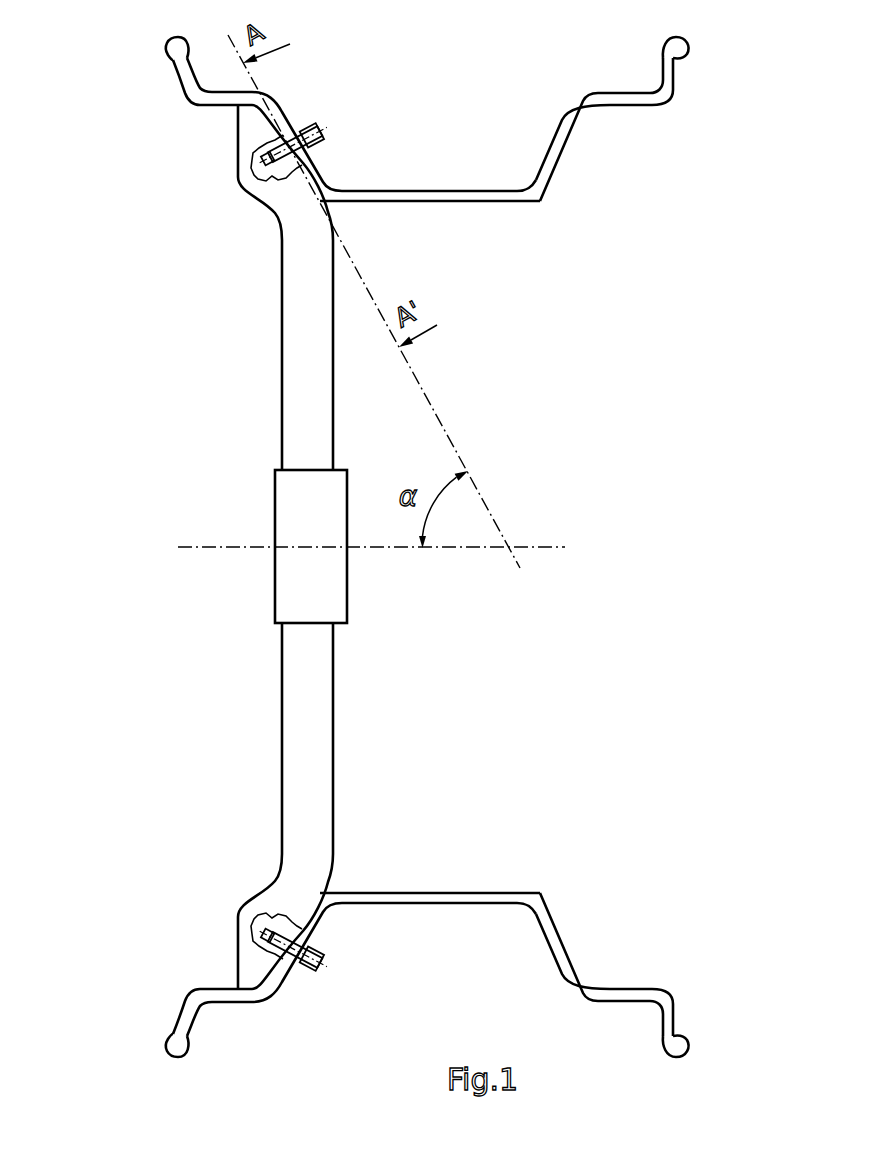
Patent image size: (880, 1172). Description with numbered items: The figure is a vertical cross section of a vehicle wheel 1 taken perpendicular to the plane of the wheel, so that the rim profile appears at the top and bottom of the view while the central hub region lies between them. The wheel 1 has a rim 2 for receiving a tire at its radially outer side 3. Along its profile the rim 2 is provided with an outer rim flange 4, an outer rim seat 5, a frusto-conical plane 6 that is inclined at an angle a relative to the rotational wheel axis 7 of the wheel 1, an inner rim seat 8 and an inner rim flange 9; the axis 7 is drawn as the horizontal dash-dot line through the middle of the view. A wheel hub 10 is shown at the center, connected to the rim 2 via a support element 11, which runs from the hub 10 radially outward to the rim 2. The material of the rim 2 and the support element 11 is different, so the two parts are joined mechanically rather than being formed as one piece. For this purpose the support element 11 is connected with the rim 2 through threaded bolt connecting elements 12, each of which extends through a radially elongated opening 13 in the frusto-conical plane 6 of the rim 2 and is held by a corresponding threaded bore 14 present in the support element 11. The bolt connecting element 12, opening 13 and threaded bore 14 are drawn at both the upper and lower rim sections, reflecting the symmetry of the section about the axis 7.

The wheel 1 is at (170, 284).
The rim 2 is at (423, 193).
The radially outer side 3 is at (447, 171).
The outer rim flange 4 is at (173, 52).
The outer rim seat 5 is at (187, 87).
The frusto-conical plane 6 is at (283, 110).
The rotational wheel axis 7 is at (223, 549).
The inner rim seat 8 is at (632, 108).
The inner rim flange 9 is at (688, 50).
The wheel hub 10 is at (282, 497).
The support element 11 is at (288, 407).
The threaded bolt connecting element 12 is at (317, 136).
The radially elongated opening 13 is at (272, 150).
The threaded bore 14 is at (267, 166).